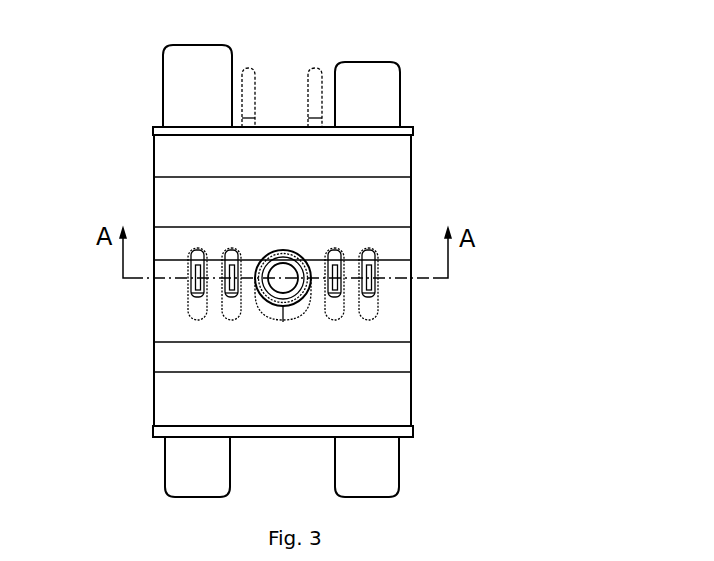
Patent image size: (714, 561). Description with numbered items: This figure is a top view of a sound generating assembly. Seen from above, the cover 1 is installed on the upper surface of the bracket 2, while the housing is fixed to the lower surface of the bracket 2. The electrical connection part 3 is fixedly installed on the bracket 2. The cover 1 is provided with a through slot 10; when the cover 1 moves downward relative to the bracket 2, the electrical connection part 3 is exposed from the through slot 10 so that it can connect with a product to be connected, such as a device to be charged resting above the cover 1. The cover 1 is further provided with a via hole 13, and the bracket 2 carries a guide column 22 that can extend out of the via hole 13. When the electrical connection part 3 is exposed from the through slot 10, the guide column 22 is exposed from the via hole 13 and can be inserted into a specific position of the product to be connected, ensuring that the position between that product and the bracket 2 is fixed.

The cover 1 is at (183, 200).
The bracket 2 is at (378, 102).
The electrical connection part 3 is at (196, 287).
The through slot 10 is at (233, 309).
The via hole 13 is at (290, 310).
The guide column 22 is at (283, 270).